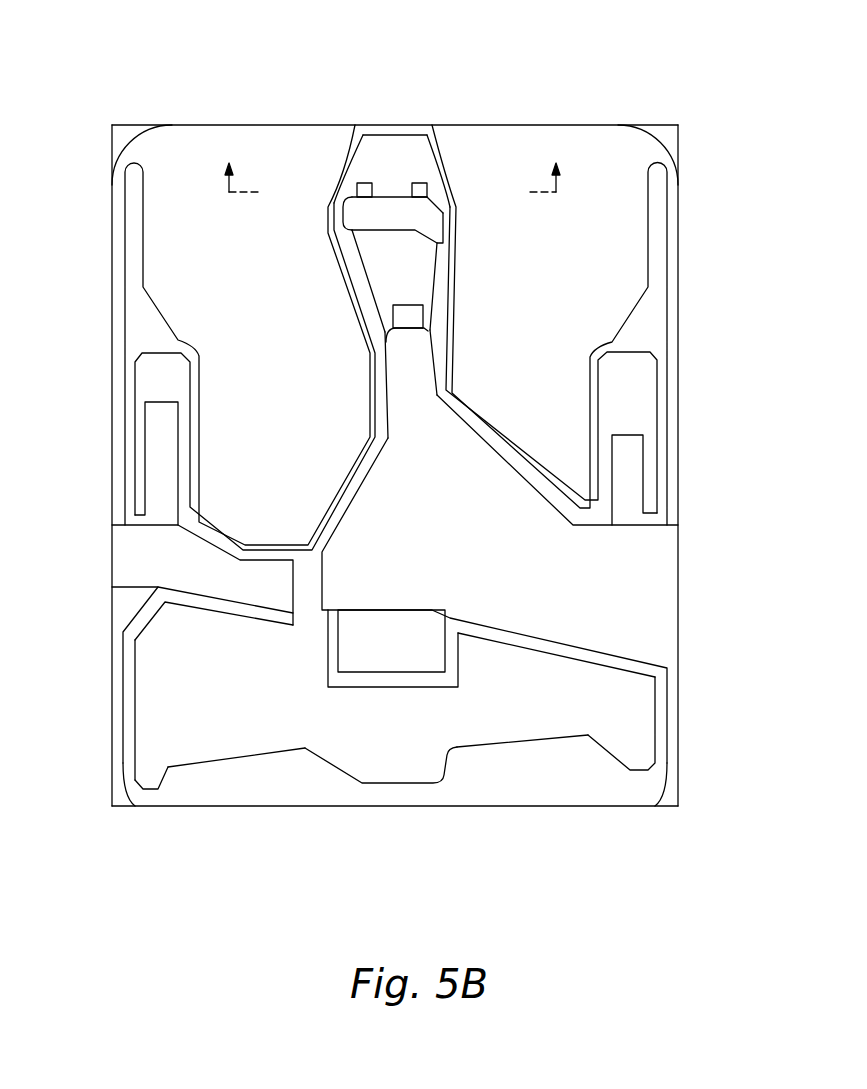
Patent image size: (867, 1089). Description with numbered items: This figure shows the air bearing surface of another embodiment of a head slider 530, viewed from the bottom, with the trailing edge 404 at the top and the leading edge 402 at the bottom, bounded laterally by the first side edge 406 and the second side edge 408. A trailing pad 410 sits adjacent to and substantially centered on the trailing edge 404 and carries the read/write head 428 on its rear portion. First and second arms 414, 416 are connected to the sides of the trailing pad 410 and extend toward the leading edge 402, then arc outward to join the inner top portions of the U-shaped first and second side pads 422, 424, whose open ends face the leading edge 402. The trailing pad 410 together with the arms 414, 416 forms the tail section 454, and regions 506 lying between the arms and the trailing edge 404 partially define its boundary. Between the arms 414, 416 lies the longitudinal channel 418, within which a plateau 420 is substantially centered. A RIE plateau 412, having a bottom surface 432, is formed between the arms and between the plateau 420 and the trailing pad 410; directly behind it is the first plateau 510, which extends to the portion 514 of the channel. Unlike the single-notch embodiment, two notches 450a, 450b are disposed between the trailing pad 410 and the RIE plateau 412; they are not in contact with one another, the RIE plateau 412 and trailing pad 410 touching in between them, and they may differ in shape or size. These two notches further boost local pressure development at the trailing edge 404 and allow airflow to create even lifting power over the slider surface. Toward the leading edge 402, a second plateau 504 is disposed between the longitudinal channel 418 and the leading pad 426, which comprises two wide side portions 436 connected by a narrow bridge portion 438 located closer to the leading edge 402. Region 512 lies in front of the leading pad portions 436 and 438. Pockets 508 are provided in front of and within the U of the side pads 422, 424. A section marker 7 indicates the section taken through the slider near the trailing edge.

The head slider 530 is at (128, 26).
The trailing edge 404 is at (596, 98).
The leading edge 402 is at (596, 838).
The first side edge 406 is at (101, 213).
The second side edge 408 is at (690, 213).
The read/write head 428 is at (415, 130).
The trailing pad 410 is at (380, 152).
The first notch 450a is at (357, 188).
The second notch 450b is at (430, 185).
The tail section 454 is at (340, 208).
The bottom surface 432 is at (420, 223).
The RIE plateau 412 is at (440, 208).
The first arm 414 is at (347, 247).
The second arm 416 is at (445, 263).
The first plateau 510 is at (395, 281).
The plateau 420 is at (410, 316).
The longitudinal channel 418 is at (420, 416).
The first side pad 422 is at (160, 378).
The second side pad 424 is at (630, 378).
The regions 506 is at (243, 260).
The pockets 508 is at (160, 478).
The portion of longitudinal channel 514 is at (140, 545).
The second plateau 504 is at (416, 658).
The side portions 436 is at (262, 695).
The leading pad 426 is at (632, 718).
The region 512 is at (248, 788).
The bridge portion 438 is at (400, 773).
The section line 7- 7 is at (394, 164).